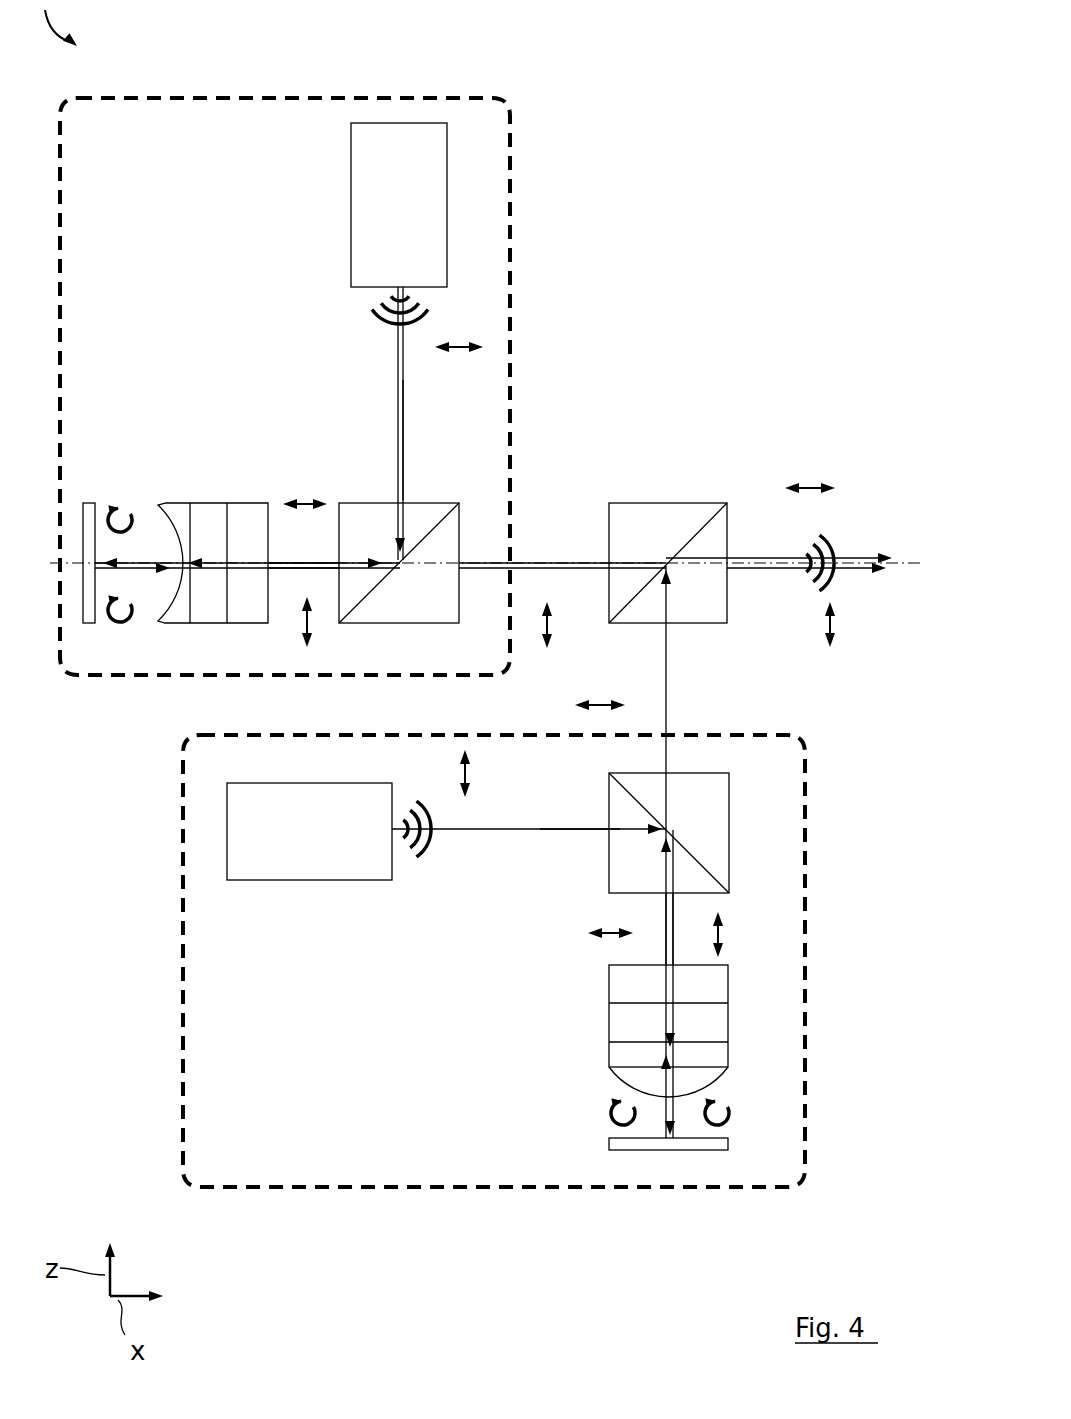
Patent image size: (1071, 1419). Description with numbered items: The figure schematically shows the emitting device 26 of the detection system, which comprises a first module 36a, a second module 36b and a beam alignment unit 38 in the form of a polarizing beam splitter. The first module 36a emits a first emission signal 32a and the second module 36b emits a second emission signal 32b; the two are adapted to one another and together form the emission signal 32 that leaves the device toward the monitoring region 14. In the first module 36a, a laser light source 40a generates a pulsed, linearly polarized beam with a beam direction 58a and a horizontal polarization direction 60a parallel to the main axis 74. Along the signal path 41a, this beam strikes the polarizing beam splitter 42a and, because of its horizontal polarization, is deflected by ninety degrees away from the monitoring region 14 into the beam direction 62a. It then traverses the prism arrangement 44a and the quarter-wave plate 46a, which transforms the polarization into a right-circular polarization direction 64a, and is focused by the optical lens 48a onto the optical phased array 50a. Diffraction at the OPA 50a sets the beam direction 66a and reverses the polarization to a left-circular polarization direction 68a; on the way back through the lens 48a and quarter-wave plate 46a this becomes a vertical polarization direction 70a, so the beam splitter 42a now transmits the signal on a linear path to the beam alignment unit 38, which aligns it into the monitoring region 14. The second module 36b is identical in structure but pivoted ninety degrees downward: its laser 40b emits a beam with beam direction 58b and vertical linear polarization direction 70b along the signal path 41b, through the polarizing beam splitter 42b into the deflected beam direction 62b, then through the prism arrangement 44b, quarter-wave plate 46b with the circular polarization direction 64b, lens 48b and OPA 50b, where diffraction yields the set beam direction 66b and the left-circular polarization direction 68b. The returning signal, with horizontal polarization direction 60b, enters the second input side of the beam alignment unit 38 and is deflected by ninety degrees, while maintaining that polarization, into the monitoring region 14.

The emitting device 26 is at (55, 25).
The first module 36a is at (229, 96).
The second module 36b is at (300, 1190).
The light source 40a is at (426, 210).
The laser light source 40b is at (316, 847).
The first emission signal 32a is at (373, 316).
The second emission signal 32b is at (405, 855).
The emission signal 32 is at (835, 557).
The beam direction 58a is at (396, 357).
The beam direction 58b is at (480, 832).
The signal path 41a is at (404, 394).
The signal path 41b is at (560, 827).
The polarizing beam splitter 42a is at (425, 515).
The polarizing beam splitter 42b is at (708, 822).
The beam alignment unit 38 is at (660, 530).
The prism arrangement 44a is at (220, 520).
The prism arrangement 44b is at (620, 1010).
The quarter-wave plate 46a is at (175, 515).
The quarter-wave plate 46b is at (720, 1050).
The optical lens 48a is at (145, 540).
The optical lens 48b is at (630, 1077).
The optical phased array 50a is at (87, 625).
The OPA 50b is at (645, 1142).
The horizontal polarization direction 60a is at (460, 345).
The polarization direction 60b is at (815, 487).
The vertical polarization direction 70a is at (311, 642).
The linear polarization direction 70b is at (470, 772).
The beam direction 62a is at (290, 555).
The beam direction 62b is at (673, 912).
The right-circular polarization direction 64a is at (112, 503).
The rotational polarization direction 64b is at (730, 1105).
The left-circular polarization direction 68a is at (110, 625).
The left-circular polarization direction 68b is at (607, 1112).
The set beam direction 66a is at (280, 590).
The set beam direction 66b is at (770, 556).
The main axis 74 is at (920, 560).
The monitoring region 14 is at (923, 637).